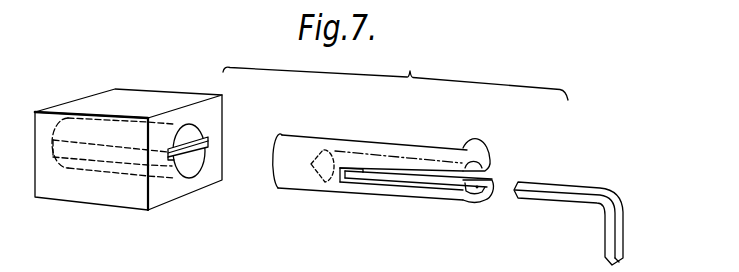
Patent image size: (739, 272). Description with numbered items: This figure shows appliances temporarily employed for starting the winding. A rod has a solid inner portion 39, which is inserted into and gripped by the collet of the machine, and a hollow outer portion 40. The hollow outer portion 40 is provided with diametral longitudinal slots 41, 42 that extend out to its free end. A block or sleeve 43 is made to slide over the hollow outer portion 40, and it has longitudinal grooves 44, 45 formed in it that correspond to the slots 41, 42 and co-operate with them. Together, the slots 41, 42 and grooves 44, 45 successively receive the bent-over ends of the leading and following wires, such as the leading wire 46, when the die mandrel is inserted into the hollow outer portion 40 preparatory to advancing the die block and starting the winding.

The solid inner portion 39 is at (293, 158).
The hollow outer portion 40 is at (392, 144).
The longitudinal slot 41 is at (413, 185).
The longitudinal slot 42 is at (483, 173).
The block or sleeve 43 is at (68, 197).
The longitudinal groove 44 is at (172, 158).
The longitudinal groove 45 is at (203, 142).
The leading wire 46 is at (605, 192).